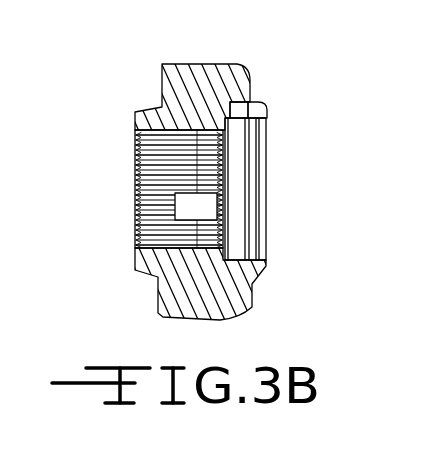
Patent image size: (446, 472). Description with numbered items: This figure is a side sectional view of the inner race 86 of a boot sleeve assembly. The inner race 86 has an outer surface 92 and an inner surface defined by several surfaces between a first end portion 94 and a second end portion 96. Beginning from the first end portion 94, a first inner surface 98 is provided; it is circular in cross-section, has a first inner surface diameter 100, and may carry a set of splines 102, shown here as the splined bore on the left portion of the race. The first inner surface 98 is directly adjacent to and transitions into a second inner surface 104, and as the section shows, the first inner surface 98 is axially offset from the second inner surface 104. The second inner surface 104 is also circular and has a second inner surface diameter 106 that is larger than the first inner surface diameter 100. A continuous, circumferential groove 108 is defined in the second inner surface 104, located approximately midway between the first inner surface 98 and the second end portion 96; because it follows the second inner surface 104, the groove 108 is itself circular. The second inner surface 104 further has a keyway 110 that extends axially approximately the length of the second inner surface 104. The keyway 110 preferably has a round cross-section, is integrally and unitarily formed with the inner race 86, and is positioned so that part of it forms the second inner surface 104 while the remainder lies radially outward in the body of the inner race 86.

The inner race 86 is at (210, 82).
The outer surface 92 is at (150, 90).
The first end portion 94 is at (128, 121).
The second end portion 96 is at (328, 180).
The first inner surface 98 is at (168, 247).
The first inner surface diameter 100 is at (196, 207).
The splines 102 is at (140, 165).
The second inner surface 104 is at (237, 248).
The second inner surface diameter 106 is at (272, 189).
The groove 108 is at (248, 102).
The keyway 110 is at (258, 108).